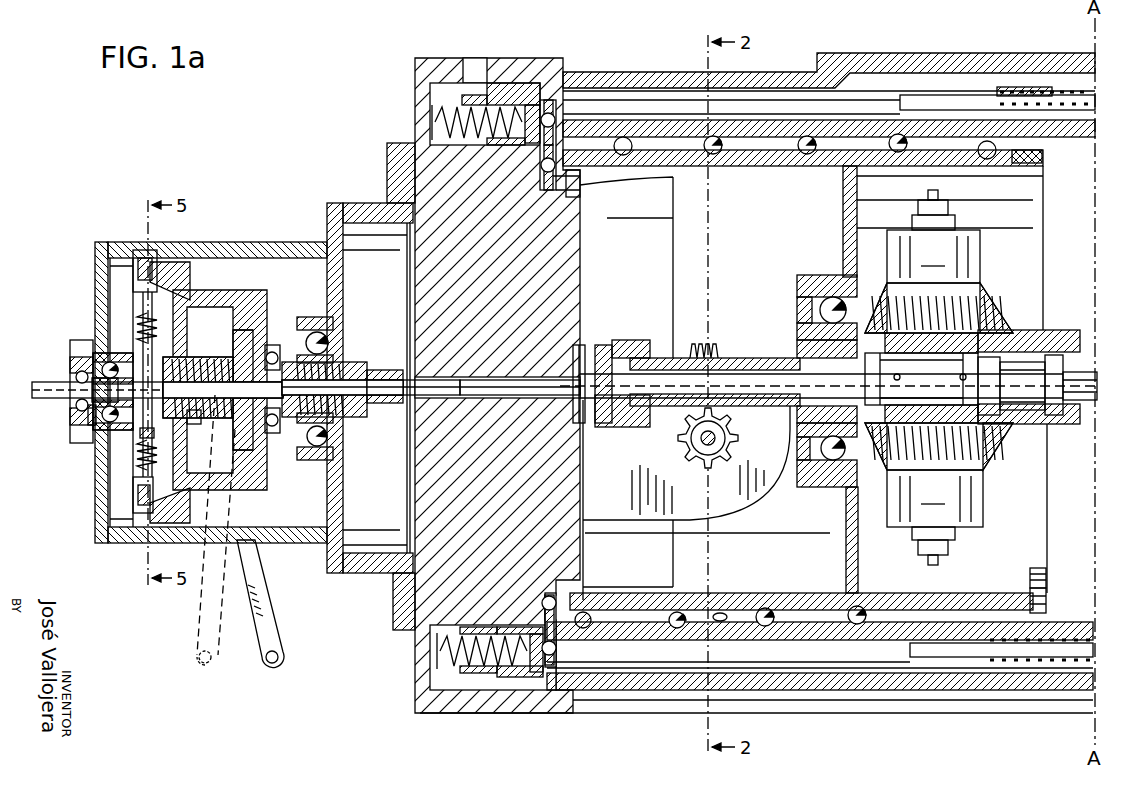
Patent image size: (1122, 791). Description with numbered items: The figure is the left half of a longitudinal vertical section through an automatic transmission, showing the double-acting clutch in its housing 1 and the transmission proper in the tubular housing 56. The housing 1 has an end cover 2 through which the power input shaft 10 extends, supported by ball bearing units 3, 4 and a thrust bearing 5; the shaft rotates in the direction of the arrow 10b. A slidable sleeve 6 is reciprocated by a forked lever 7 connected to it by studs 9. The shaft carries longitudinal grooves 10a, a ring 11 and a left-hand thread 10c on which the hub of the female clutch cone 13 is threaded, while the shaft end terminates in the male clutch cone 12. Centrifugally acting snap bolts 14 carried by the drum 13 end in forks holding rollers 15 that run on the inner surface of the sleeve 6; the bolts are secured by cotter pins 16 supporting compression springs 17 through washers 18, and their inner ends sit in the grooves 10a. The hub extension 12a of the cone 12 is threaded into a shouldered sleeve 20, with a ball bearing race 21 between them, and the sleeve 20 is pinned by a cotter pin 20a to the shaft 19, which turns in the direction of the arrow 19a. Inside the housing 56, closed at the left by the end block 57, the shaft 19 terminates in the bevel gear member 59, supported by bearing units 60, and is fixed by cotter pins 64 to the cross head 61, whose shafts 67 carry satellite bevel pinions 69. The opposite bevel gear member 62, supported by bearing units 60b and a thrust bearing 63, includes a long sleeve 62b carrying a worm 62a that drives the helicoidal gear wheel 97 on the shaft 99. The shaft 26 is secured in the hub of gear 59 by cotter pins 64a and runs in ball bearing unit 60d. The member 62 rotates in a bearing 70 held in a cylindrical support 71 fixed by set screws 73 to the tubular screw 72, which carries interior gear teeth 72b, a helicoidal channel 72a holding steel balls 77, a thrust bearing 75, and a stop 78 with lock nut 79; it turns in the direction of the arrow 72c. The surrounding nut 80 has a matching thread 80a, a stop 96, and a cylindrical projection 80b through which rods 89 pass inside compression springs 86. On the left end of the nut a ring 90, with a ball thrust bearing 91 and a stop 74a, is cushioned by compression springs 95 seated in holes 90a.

The housing 1 is at (243, 386).
The end cover 2 is at (104, 470).
The ball bearing unit 3 is at (318, 332).
The ball bearing unit 4 is at (100, 356).
The thrust bearing 5 is at (90, 415).
The slidable ring or sleeve 6 is at (264, 252).
The forked lever 7 is at (270, 620).
The shafts or studs 9 is at (243, 358).
The power input shaft 10 is at (40, 398).
The longitudinal grooves 10a is at (132, 352).
The arrow 10b is at (48, 388).
The left-hand thread 10c is at (195, 360).
The ring 11 is at (195, 424).
The male clutch cone or drum 12 is at (252, 312).
The hub extension 12a is at (333, 358).
The female clutch cone or drum 13 is at (176, 262).
The snap bolts 14 is at (138, 318).
The rollers 15 is at (142, 254).
The cotter pins 16 is at (140, 436).
The compression springs 17 is at (138, 456).
The washers 18 is at (218, 440).
The shaft 19 is at (406, 396).
The arrow 19a is at (488, 380).
The shouldered sleeve 20 is at (352, 418).
The cotter pin 20a is at (384, 372).
The ball bearing race 21 is at (274, 428).
The shaft 26 is at (1080, 374).
The tubular housing 56 is at (644, 74).
The cover or end block 57 is at (578, 263).
The bevel gear member 59 is at (1052, 330).
The ball bearing units 60 is at (998, 414).
The bearing units 60b is at (628, 350).
The ball bearing unit 60d is at (876, 362).
The cross head 61 is at (980, 296).
The bevel gear member 62 is at (786, 342).
The worm 62a is at (712, 355).
The sleeve 62b is at (730, 364).
The thrust bearing unit 63 is at (594, 343).
The cotter pins 64 is at (897, 381).
The cotter pins 64a is at (1078, 420).
The shafts 67 is at (940, 203).
The satellite bevel pinion 69 is at (939, 378).
The ball bearing unit 70 is at (818, 275).
The cylindrical support 71 is at (843, 197).
The tubular sleeve member or screw 72 is at (745, 167).
The helicoidal channel or thread 72a is at (842, 598).
The rim of interior gear teeth 72b is at (582, 195).
The arrow 72c is at (720, 612).
The key type set screws 73 is at (1042, 160).
The stop 74a is at (524, 86).
The thrust ball bearing unit 75 is at (540, 172).
The calibrated steel balls 77 is at (808, 136).
The stop 78 is at (1047, 600).
The lock nut 79 is at (1047, 576).
The tubular sleeve or nut 80 is at (660, 128).
The thread 80a is at (622, 138).
The cylindrical projection 80b is at (1020, 84).
The compression springs 86 is at (1062, 88).
The rods or shafts 89 is at (904, 100).
The ring part 90 is at (520, 676).
The holes 90a is at (486, 100).
The thrust bearing of calibrated steel balls 91 is at (558, 100).
The compression springs 95 is at (438, 116).
The stop 96 is at (556, 638).
The helicoidal gear wheel 97 is at (692, 450).
The shaft 99 is at (700, 437).